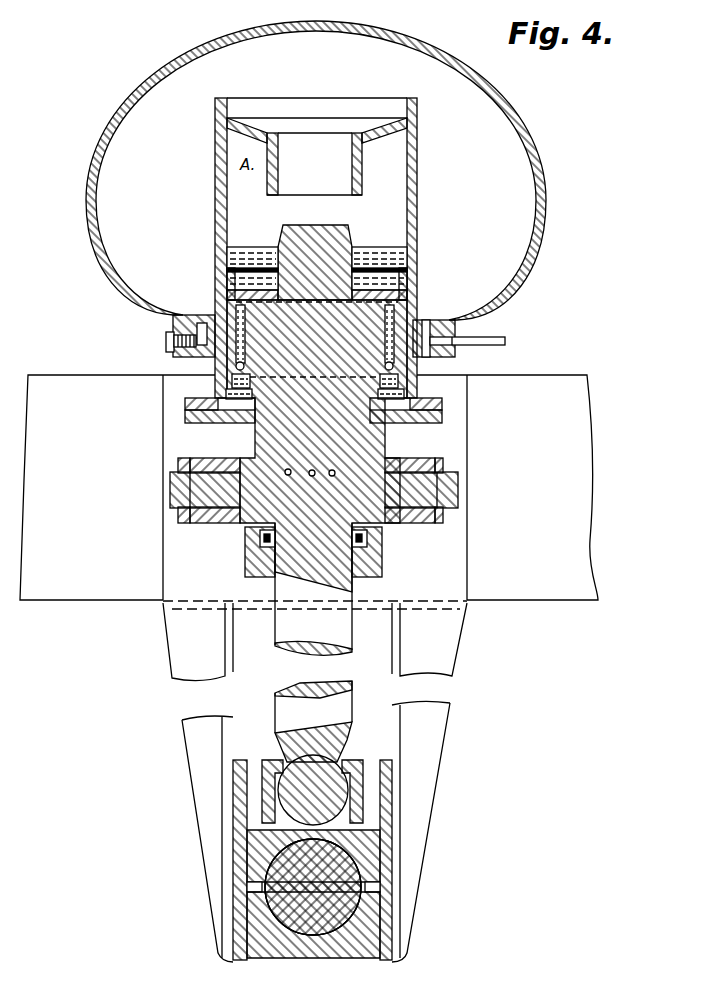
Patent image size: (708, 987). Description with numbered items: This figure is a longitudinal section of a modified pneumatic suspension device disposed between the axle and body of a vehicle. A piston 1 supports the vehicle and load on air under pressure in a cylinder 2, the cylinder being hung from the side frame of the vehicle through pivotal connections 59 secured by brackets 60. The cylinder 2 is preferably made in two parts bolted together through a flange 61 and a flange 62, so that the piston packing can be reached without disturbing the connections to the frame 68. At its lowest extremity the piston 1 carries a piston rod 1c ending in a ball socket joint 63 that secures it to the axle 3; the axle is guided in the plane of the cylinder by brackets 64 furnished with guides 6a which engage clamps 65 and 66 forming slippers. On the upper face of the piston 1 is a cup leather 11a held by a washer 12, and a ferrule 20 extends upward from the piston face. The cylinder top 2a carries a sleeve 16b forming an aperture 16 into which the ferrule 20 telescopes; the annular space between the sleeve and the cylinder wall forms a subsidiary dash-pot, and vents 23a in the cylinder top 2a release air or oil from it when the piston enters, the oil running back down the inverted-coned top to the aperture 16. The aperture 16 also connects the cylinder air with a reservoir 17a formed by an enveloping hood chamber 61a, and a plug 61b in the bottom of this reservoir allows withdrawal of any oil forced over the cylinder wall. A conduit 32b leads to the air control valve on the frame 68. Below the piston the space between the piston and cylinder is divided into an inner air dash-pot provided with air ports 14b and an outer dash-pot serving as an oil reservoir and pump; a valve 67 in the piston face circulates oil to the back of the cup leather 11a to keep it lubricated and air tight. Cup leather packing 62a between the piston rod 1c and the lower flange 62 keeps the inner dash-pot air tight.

The piston 1 is at (370, 442).
The piston rod 1c is at (338, 632).
The cylinder 2 is at (416, 149).
The cylinder top 2a is at (392, 126).
The axle 3 is at (313, 930).
The guides 6a is at (243, 893).
The cup leather 11a is at (407, 280).
The washer 12 is at (235, 265).
The air ports 14b is at (286, 474).
The aperture 16 is at (314, 164).
The sleeve 16b is at (353, 182).
The reservoir 17a is at (477, 182).
The ferrule 20 is at (317, 221).
The vents 23a is at (253, 128).
The conduit 32b is at (483, 342).
The pivotal connections 59 is at (200, 480).
The brackets 60 is at (218, 521).
The flange 61 is at (430, 399).
The hood chamber 61a is at (132, 101).
The plug 61b is at (173, 342).
The flange 62 is at (437, 418).
The cup leather packing 62a is at (377, 543).
The ball socket joint 63 is at (337, 800).
The brackets 64 is at (175, 647).
The clamp 65 is at (257, 850).
The clamp 66 is at (247, 927).
The valve 67 is at (398, 367).
The frame 68 is at (309, 492).